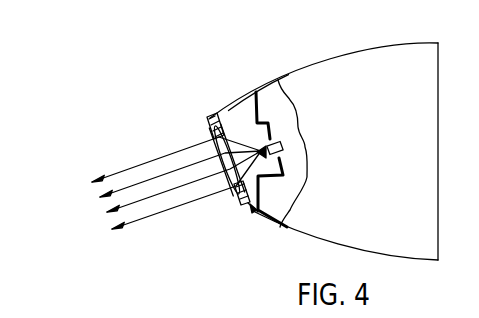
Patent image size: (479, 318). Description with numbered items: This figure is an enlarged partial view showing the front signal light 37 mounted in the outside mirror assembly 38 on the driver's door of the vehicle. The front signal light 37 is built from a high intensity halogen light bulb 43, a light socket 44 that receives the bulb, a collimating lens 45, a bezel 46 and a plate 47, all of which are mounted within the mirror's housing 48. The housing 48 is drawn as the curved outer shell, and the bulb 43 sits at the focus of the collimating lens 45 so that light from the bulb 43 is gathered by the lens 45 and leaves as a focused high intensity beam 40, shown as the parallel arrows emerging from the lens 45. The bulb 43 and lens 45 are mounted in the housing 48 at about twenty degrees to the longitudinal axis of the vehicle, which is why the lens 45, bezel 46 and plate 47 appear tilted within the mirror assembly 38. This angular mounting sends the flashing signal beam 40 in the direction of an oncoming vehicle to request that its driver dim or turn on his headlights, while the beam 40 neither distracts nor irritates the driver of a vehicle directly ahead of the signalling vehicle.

The outside mirror assembly 38 is at (380, 44).
The mirror housing 48 is at (313, 62).
The bezel 46 is at (290, 72).
The light socket 44 is at (303, 112).
The halogen light bulb 43 is at (283, 160).
The collimating lens 45 is at (232, 174).
The flashing signal beam 40 is at (117, 174).
The plate 47 is at (237, 204).
The front signal light 37 is at (236, 204).